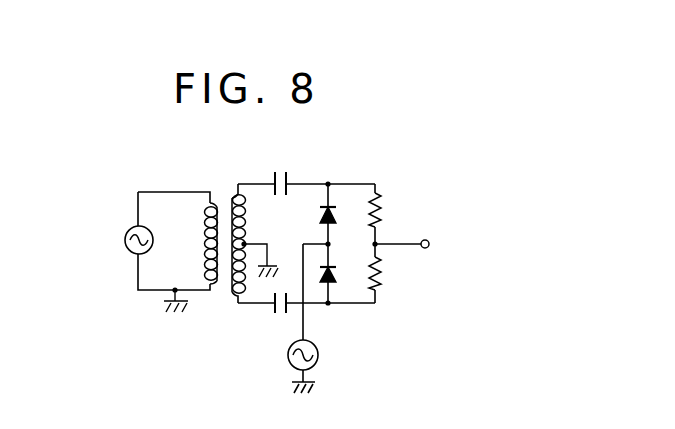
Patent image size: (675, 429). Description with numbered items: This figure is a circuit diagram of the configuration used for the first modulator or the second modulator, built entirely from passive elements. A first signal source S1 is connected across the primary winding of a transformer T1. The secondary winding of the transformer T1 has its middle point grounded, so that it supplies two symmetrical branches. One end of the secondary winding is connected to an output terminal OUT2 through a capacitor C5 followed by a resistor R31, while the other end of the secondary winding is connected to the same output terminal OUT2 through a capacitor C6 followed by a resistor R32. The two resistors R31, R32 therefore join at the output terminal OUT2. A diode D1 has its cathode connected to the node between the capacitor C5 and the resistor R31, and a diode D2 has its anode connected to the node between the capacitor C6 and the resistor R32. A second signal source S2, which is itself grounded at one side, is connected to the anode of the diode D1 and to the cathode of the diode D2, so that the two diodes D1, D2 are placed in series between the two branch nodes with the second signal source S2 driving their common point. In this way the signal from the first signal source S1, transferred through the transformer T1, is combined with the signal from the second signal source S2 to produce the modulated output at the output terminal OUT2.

The first signal source S1 is at (125, 240).
The transformer T1 is at (223, 188).
The capacitor C5 is at (280, 168).
The capacitor C6 is at (280, 318).
The diode D1 is at (346, 212).
The diode D2 is at (344, 277).
The second signal source S2 is at (320, 352).
The resistor R31 is at (385, 206).
The resistor R32 is at (385, 276).
The output terminal OUT2 is at (434, 246).